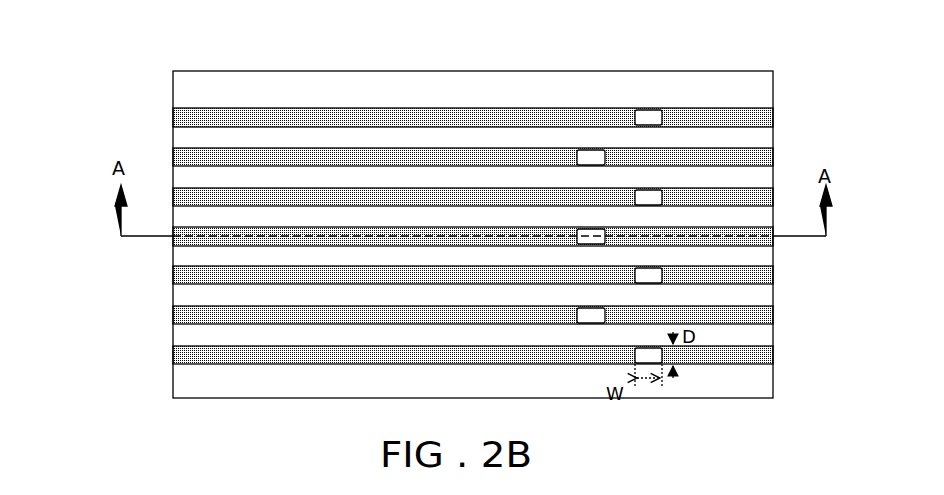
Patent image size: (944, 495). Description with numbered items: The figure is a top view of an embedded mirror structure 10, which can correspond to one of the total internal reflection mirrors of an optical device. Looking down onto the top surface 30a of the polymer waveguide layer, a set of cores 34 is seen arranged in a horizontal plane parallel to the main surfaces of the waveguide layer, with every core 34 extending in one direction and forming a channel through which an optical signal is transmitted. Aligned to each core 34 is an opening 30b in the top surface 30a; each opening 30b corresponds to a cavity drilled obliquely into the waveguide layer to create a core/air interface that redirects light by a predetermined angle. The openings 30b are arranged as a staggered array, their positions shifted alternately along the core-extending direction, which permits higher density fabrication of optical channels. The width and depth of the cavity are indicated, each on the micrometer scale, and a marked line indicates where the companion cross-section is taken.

The embedded mirror structure 10 is at (490, 213).
The top surface 30a is at (758, 90).
The opening 30b is at (651, 105).
The core 34 is at (773, 115).